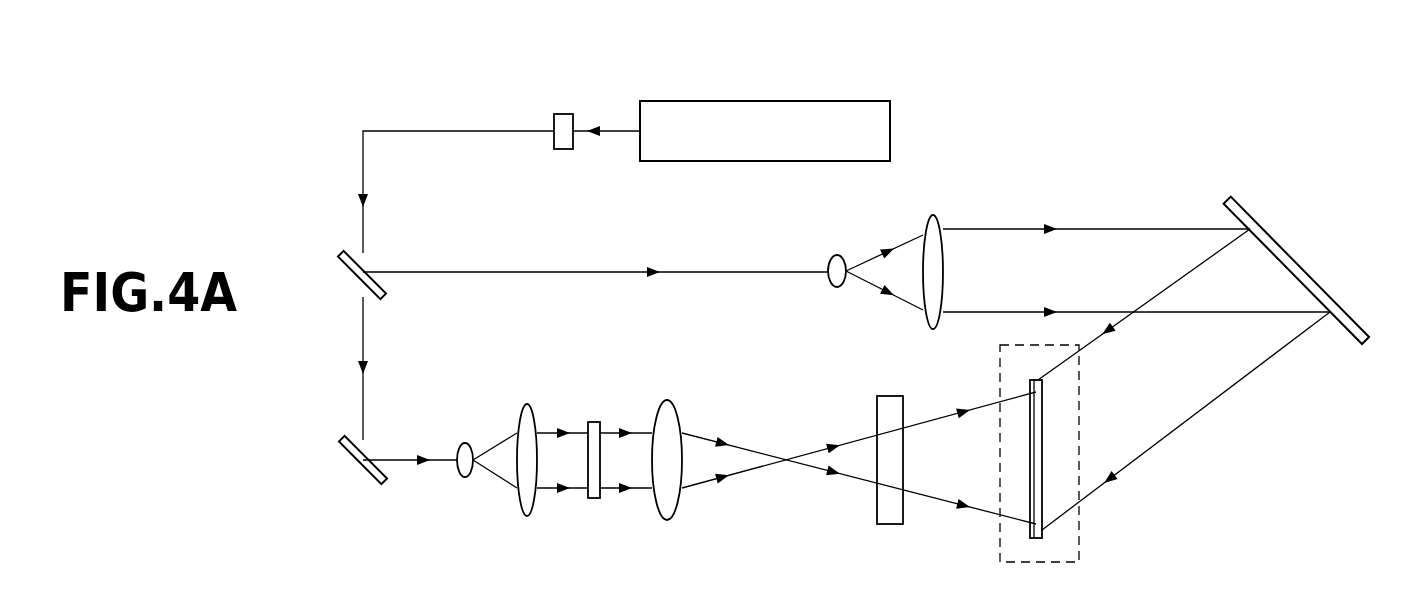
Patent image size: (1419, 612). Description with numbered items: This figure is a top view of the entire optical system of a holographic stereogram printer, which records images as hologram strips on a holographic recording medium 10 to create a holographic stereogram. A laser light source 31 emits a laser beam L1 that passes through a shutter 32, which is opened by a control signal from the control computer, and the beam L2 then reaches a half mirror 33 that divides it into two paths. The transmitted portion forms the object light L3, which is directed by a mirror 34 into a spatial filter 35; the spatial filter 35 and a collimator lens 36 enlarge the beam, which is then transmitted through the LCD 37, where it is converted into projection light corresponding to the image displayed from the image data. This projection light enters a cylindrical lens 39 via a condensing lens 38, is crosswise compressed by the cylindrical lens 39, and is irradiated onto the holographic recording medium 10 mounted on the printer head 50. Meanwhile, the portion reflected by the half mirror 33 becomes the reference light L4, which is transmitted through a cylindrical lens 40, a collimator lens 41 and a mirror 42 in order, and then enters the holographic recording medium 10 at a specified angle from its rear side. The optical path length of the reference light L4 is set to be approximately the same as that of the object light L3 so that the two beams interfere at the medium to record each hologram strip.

The laser light source 31 is at (780, 101).
The shutter 32 is at (566, 113).
The laser beam L1 is at (610, 131).
The laser beam after shutter L2 is at (363, 172).
The half mirror 33 is at (354, 276).
The reference light L4 is at (480, 271).
The object light L3 is at (364, 326).
The mirror 34 is at (352, 469).
The spatial filter 35 is at (466, 443).
The collimator lens 36 is at (527, 404).
The LCD 37 is at (596, 421).
The condensing lens 38 is at (672, 401).
The cylindrical lens 39 is at (890, 396).
The holographic recording medium 10 is at (1031, 403).
The printer head 50 is at (1079, 535).
The cylindrical lens 40 is at (834, 287).
The collimator lens 41 is at (934, 216).
The mirror 42 is at (1265, 228).